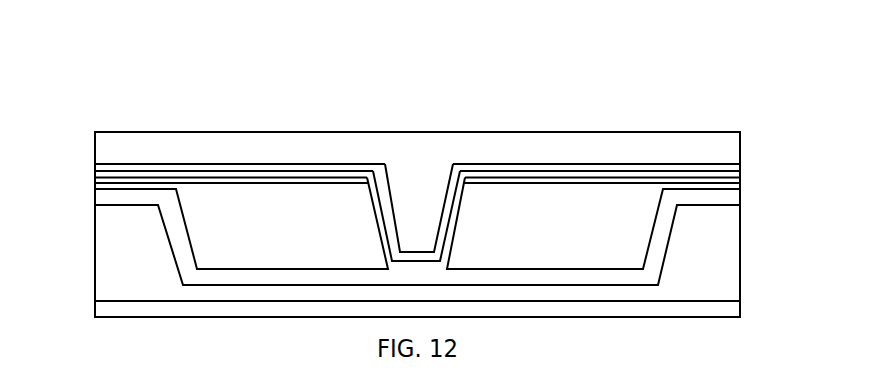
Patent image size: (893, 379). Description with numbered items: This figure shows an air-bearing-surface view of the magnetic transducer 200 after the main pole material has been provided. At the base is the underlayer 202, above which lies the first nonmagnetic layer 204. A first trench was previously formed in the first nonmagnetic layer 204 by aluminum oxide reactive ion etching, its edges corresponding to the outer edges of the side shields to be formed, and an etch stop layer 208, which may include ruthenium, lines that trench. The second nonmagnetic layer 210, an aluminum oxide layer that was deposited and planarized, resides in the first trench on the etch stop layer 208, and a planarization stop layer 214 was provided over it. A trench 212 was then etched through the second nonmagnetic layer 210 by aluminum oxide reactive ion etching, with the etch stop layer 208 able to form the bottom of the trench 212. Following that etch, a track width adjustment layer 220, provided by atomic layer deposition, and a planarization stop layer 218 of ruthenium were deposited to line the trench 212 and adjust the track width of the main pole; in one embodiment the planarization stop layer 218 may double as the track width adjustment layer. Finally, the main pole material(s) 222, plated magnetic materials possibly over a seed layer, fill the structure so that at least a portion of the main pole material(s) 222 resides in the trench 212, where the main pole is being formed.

The magnetic transducer 200 is at (438, 54).
The underlayer 202 is at (95, 313).
The first nonmagnetic layer 204 is at (740, 257).
The etch stop layer 208 is at (95, 197).
The second nonmagnetic layer 210 is at (190, 188).
The trench 212 is at (414, 152).
The planarization stop layer 214 is at (255, 180).
The planarization stop layer 218 is at (498, 172).
The track width adjustment layer 220 is at (585, 164).
The main pole material(s) 222 is at (452, 132).